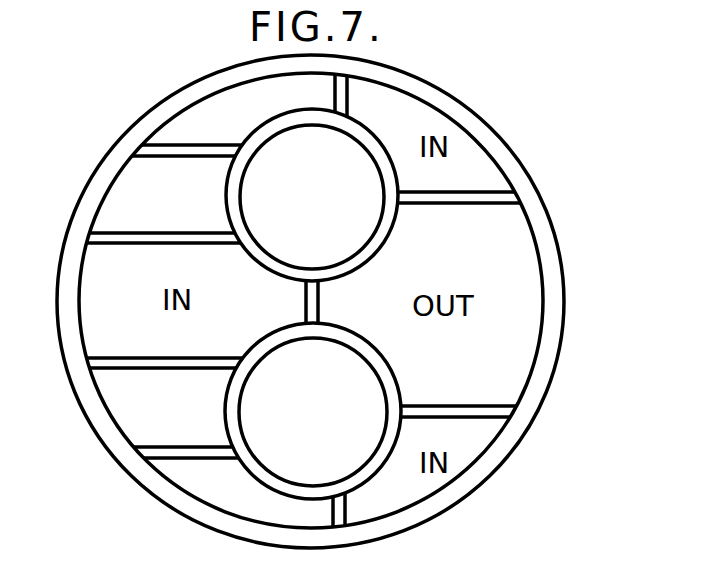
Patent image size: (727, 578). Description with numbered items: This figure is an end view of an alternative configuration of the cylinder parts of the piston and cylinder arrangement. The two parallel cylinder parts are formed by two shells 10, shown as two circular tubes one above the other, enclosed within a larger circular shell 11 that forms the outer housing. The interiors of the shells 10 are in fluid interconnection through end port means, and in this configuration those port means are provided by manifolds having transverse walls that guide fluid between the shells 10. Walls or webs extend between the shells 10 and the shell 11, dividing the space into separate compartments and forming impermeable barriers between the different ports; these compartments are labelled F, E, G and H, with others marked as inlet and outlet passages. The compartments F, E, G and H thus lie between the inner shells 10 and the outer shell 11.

The shell 10 is at (376, 140).
The shell 11 is at (508, 141).
The chamber F is at (239, 115).
The chamber E is at (164, 212).
The chamber G is at (165, 391).
The chamber H is at (240, 487).